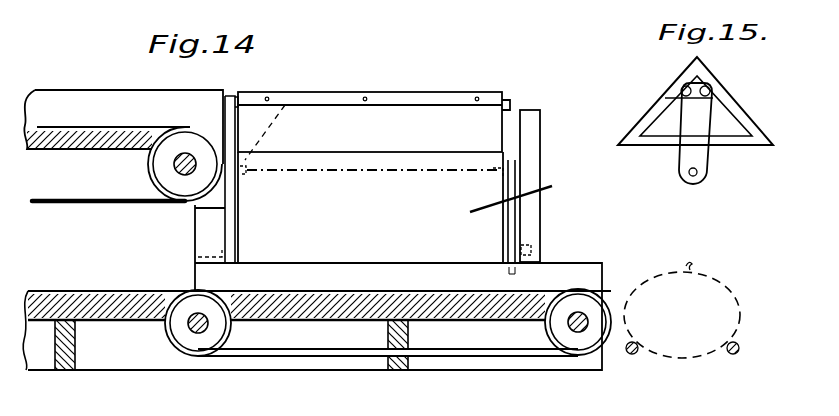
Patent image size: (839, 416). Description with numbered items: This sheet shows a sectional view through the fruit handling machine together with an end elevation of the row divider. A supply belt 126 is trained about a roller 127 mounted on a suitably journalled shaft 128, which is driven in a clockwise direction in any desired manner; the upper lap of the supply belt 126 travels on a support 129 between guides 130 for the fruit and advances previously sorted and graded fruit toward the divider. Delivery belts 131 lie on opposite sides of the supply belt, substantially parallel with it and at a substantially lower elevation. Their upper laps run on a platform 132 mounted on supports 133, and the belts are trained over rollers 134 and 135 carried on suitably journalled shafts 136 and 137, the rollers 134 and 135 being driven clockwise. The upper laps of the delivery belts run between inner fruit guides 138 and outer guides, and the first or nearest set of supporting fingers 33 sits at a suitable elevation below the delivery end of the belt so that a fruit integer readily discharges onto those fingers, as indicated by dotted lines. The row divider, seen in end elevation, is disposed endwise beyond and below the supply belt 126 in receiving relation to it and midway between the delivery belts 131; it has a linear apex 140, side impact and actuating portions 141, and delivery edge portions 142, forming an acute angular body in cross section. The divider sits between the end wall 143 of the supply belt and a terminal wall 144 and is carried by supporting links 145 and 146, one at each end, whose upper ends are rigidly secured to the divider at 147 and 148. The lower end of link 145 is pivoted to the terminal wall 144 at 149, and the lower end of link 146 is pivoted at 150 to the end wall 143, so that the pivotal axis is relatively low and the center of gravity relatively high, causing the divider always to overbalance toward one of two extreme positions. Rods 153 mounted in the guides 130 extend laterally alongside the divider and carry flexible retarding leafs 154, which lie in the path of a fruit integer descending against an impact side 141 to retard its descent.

In FIG. 14, the supply belt 126 is at (100, 125).
In FIG. 14, the guides 130 is at (65, 78).
In FIG. 14, the support 129 is at (77, 147).
In FIG. 14, the roller 127 is at (162, 163).
In FIG. 14, the shaft 128 is at (176, 178).
In FIG. 14, the rods 153 is at (233, 92).
In FIG. 14, the flexible retarding leafs 154 is at (367, 127).
In FIG. 14, the upper end securement of link 146 148 is at (294, 88).
In FIG. 14, the linear apex 140 is at (481, 150).
In FIG. 15, the linear apex 140 is at (700, 60).
In FIG. 14, the supporting link 146 is at (230, 213).
In FIG. 14, the end wall 143 is at (210, 227).
In FIG. 14, the pivot 150 is at (200, 254).
In FIG. 14, the terminal wall 144 is at (540, 142).
In FIG. 14, the upper end securement of link 145 147 is at (544, 168).
In FIG. 15, the upper end securement of link 145 147 is at (707, 79).
In FIG. 14, the side impact and actuating portions 141 is at (532, 194).
In FIG. 15, the side impact and actuating portions 141 is at (657, 102).
In FIG. 14, the supporting link 145 is at (515, 218).
In FIG. 15, the supporting link 145 is at (683, 155).
In FIG. 14, the pivot 149 is at (543, 235).
In FIG. 15, the pivot 149 is at (707, 168).
In FIG. 14, the inner fruit guides 138 is at (568, 272).
In FIG. 14, the platform 132 is at (92, 288).
In FIG. 14, the delivery belts 131 is at (313, 355).
In FIG. 14, the shaft 137 is at (187, 327).
In FIG. 14, the roller 135 is at (200, 342).
In FIG. 14, the shaft 136 is at (570, 326).
In FIG. 14, the roller 134 is at (577, 340).
In FIG. 14, the supports 133 is at (62, 372).
In FIG. 15, the delivery edge portions 142 is at (620, 146).
In FIG. 15, the supporting fingers 33 is at (638, 352).